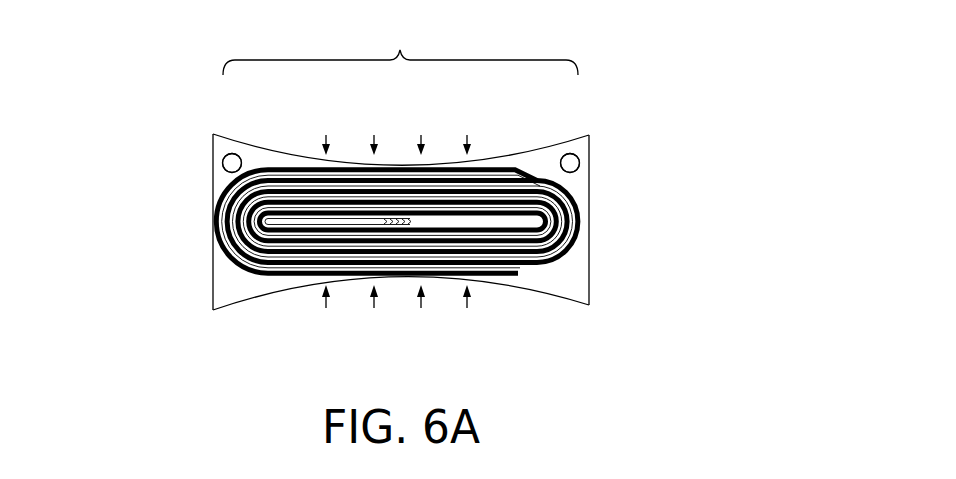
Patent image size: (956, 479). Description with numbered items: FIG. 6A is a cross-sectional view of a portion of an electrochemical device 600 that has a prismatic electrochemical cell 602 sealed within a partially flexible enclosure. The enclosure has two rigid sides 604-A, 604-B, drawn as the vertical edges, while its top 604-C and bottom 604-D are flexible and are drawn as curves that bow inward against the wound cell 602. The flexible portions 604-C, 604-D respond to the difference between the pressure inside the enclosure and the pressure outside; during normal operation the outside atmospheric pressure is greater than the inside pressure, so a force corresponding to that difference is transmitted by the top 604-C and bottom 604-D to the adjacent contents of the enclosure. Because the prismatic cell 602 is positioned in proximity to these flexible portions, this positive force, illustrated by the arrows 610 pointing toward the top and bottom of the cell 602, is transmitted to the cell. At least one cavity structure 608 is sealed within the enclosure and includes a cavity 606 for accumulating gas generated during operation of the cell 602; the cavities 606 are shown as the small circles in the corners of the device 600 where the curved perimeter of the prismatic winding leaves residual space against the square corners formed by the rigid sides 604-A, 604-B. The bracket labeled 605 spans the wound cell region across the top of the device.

The electrochemical device 600 is at (437, 198).
The prismatic electrochemical cell 602 is at (519, 277).
The side of the enclosure 604-A is at (590, 186).
The side of the enclosure 604-B is at (212, 267).
The top of the enclosure 604-C is at (510, 153).
The bottom of the enclosure 604-D is at (575, 303).
The electrode region 605 is at (400, 47).
The cavity 606 is at (224, 163).
The cavity structure 608 is at (212, 140).
The arrows 610 is at (467, 135).